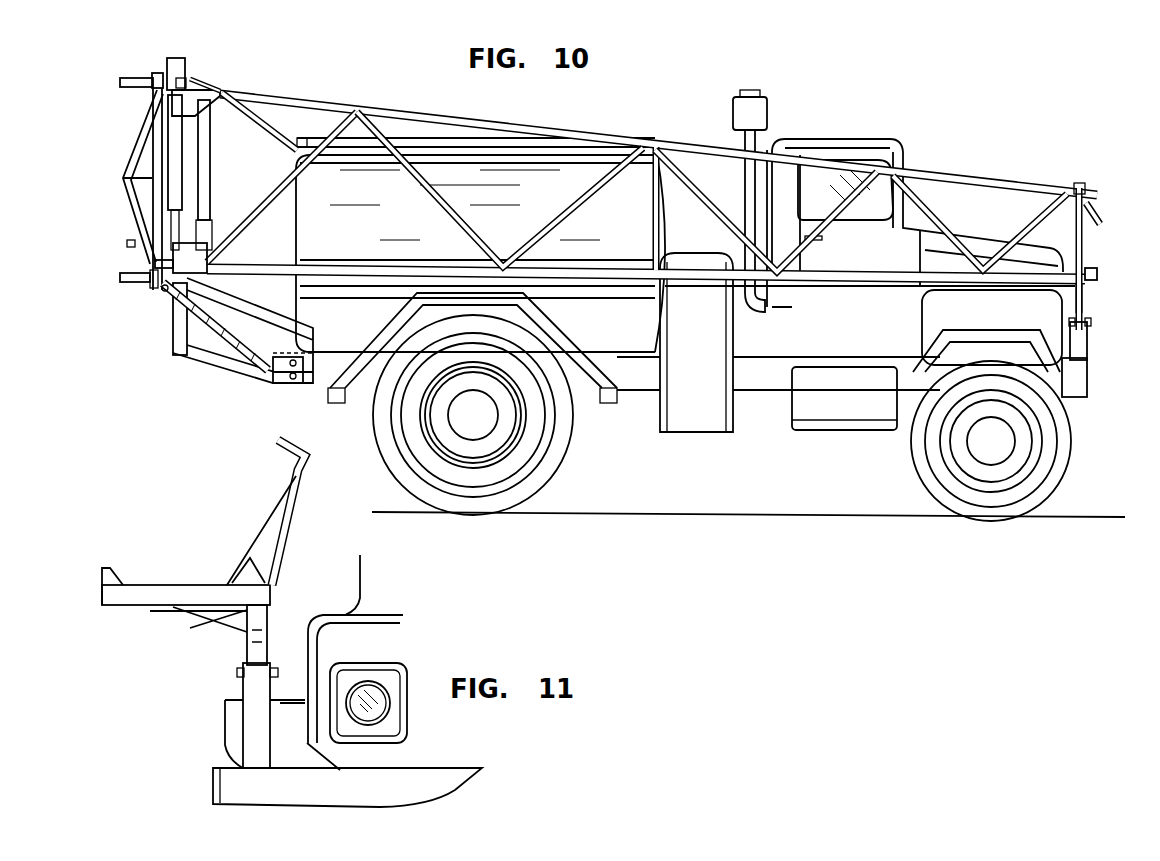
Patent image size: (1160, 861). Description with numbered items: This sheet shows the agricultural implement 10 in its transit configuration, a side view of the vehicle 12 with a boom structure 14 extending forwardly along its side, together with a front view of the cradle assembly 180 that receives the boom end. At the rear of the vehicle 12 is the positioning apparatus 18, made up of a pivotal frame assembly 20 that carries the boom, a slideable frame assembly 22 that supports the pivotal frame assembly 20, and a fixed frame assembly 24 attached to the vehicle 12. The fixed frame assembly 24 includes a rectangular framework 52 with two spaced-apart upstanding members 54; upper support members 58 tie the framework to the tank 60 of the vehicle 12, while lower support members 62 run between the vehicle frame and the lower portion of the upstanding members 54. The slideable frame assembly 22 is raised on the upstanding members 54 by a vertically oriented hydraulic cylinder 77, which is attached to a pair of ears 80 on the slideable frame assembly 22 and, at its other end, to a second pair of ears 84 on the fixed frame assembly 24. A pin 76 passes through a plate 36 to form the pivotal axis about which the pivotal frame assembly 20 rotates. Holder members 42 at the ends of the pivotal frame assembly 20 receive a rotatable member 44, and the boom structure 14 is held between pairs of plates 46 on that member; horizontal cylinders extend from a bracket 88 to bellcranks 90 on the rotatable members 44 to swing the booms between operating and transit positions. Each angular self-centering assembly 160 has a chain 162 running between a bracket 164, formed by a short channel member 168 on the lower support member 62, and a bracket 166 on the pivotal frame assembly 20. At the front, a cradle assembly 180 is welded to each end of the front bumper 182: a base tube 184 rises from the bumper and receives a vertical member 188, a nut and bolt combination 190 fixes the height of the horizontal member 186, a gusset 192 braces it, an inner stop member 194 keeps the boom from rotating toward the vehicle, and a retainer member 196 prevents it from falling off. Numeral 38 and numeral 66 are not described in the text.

In FIG. 10, the agricultural implement 10 is at (175, 148).
In FIG. 10, the vehicle 12 is at (833, 140).
In FIG. 11, the vehicle 12 is at (328, 613).
In FIG. 10, the boom structure 14 is at (414, 106).
In FIG. 10, the positioning apparatus 18 is at (106, 100).
In FIG. 10, the pivotal frame assembly 20 is at (118, 156).
In FIG. 10, the slideable frame assembly 22 is at (202, 72).
In FIG. 10, the fixed frame assembly 24 is at (178, 64).
In FIG. 10, the plate 36 is at (160, 130).
In FIG. 10, the cross bar 38 is at (128, 80).
In FIG. 10, the holder member 42 is at (156, 78).
In FIG. 10, the rotatable member 44 is at (150, 200).
In FIG. 10, the plates 46 is at (166, 92).
In FIG. 10, the rectangular framework 52 is at (168, 342).
In FIG. 10, the upstanding member 54 is at (176, 324).
In FIG. 10, the upper support member 58 is at (262, 118).
In FIG. 10, the tank 60 is at (550, 158).
In FIG. 10, the lower support member 62 is at (226, 358).
In FIG. 10, the pin 66 is at (186, 64).
In FIG. 10, the pin 76 is at (198, 120).
In FIG. 10, the hydraulic cylinder 77 is at (218, 238).
In FIG. 10, the ears 80 is at (206, 80).
In FIG. 10, the ears 84 is at (180, 362).
In FIG. 10, the bracket 88 is at (126, 244).
In FIG. 10, the bellcrank 90 is at (133, 240).
In FIG. 10, the assembly 160 is at (226, 388).
In FIG. 10, the chain 162 is at (242, 352).
In FIG. 10, the bracket 164 is at (287, 396).
In FIG. 10, the bracket 166 is at (162, 294).
In FIG. 10, the channel member 168 is at (287, 357).
In FIG. 10, the cradle assembly 180 is at (1090, 330).
In FIG. 11, the cradle assembly 180 is at (200, 678).
In FIG. 10, the front bumper 182 is at (1090, 387).
In FIG. 11, the front bumper 182 is at (212, 782).
In FIG. 10, the base tube 184 is at (1085, 350).
In FIG. 11, the base tube 184 is at (252, 728).
In FIG. 11, the horizontal member 186 is at (170, 588).
In FIG. 10, the vertical member 188 is at (1086, 302).
In FIG. 11, the vertical member 188 is at (248, 645).
In FIG. 10, the nut and bolt combination 190 is at (1098, 327).
In FIG. 11, the nut and bolt combination 190 is at (238, 678).
In FIG. 11, the gusset 192 is at (215, 620).
In FIG. 10, the inner stop member 194 is at (1086, 243).
In FIG. 11, the inner stop member 194 is at (293, 470).
In FIG. 10, the retainer member 196 is at (1090, 272).
In FIG. 11, the retainer member 196 is at (100, 573).